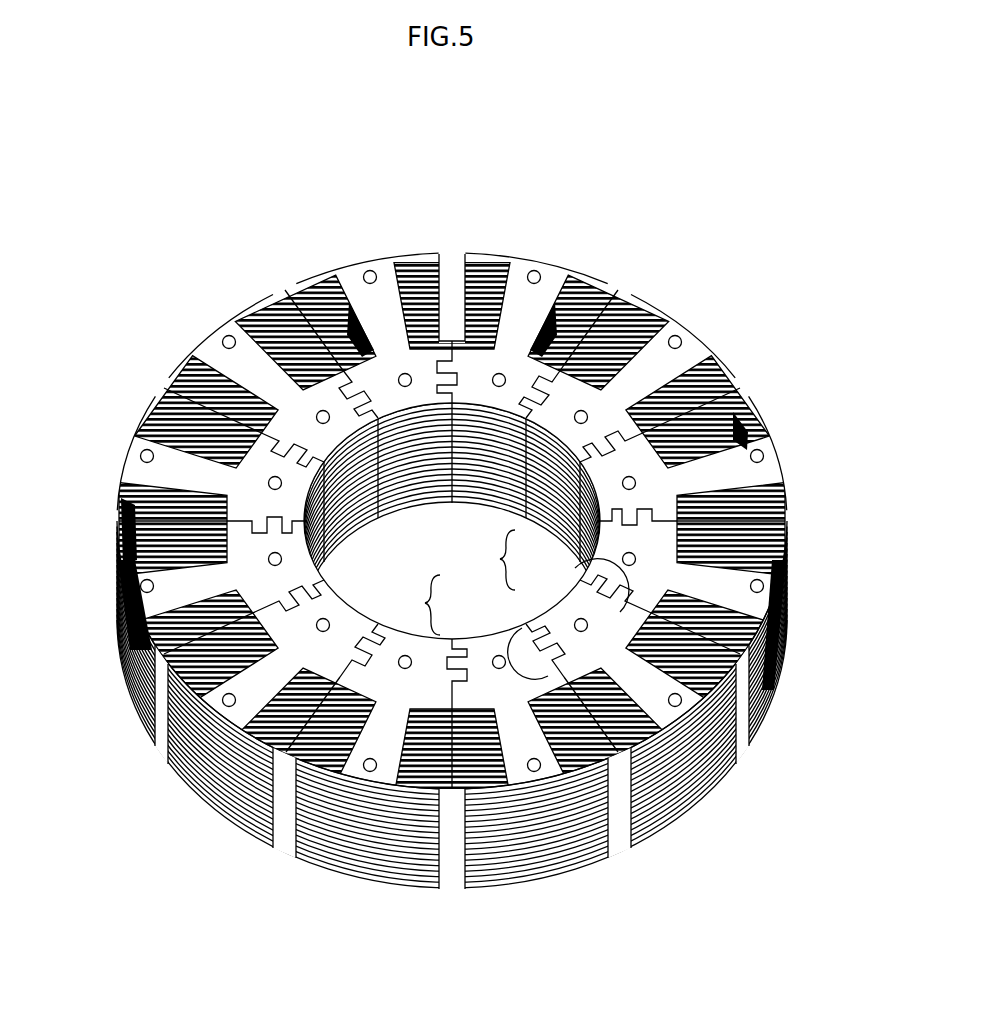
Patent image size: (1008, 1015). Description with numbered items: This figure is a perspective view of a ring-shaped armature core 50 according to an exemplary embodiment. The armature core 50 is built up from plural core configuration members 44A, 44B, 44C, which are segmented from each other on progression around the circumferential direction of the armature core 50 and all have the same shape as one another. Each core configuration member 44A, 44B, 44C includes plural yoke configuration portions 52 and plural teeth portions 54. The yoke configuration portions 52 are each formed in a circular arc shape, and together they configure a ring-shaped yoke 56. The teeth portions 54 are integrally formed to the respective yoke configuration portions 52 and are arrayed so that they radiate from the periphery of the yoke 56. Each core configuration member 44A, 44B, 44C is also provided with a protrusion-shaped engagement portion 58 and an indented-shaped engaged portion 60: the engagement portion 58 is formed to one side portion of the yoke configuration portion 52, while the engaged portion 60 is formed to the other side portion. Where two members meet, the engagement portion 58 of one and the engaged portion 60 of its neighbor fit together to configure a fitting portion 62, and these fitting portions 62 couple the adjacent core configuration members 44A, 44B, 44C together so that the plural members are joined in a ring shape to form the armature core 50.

The armature core 50 is at (470, 188).
The core configuration member 44A is at (703, 347).
The core configuration member 44B is at (380, 253).
The core configuration member 44C is at (582, 265).
The yoke configuration portion 52 is at (590, 582).
The teeth portion 54 is at (770, 588).
The yoke 56 is at (458, 490).
The engagement portion 58 is at (588, 600).
The engaged portion 60 is at (590, 595).
The fitting portion 62 is at (454, 582).